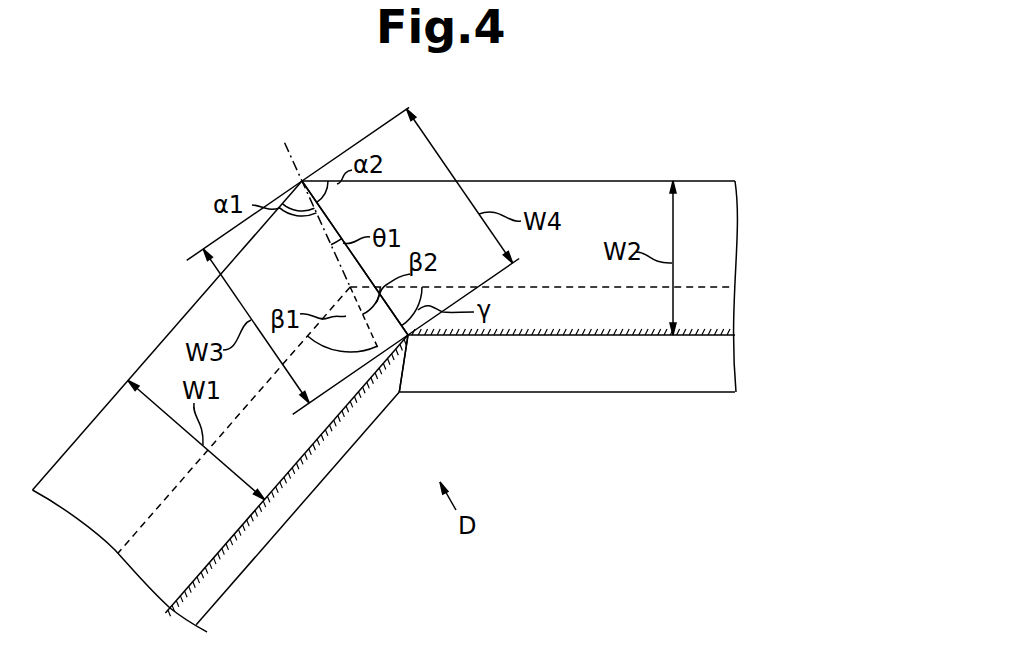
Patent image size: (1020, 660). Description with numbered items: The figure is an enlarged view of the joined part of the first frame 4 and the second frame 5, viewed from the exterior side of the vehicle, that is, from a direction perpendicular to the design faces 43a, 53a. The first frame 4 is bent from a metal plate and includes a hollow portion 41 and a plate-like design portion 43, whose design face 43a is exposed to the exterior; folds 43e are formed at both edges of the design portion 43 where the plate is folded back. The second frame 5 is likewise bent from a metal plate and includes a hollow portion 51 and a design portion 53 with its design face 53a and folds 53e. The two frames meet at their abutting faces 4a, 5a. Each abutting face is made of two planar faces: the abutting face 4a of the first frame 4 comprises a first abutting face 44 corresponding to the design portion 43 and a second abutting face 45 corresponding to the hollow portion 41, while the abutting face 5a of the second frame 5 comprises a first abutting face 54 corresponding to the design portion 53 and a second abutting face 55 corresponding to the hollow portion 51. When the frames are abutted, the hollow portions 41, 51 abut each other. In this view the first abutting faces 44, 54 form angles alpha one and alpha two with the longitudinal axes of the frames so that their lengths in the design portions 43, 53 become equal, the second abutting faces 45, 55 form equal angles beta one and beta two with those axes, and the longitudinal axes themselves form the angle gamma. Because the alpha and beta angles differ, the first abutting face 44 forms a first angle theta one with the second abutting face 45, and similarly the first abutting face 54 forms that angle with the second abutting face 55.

The first frame 4 is at (78, 438).
The hollow portion 41 is at (247, 567).
The design portion 43 is at (113, 561).
The design face 43a is at (110, 543).
The fold 43e is at (151, 352).
The abutting face 4a is at (384, 286).
The first abutting face 44 is at (364, 274).
The second abutting face 45 is at (399, 348).
The second frame 5 is at (719, 181).
The hollow portion 51 is at (650, 394).
The design portion 53 is at (801, 286).
The design face 53a is at (740, 250).
The fold 53e is at (633, 181).
The abutting face 5a is at (384, 322).
The first abutting face 54 is at (335, 227).
The second abutting face 55 is at (400, 392).